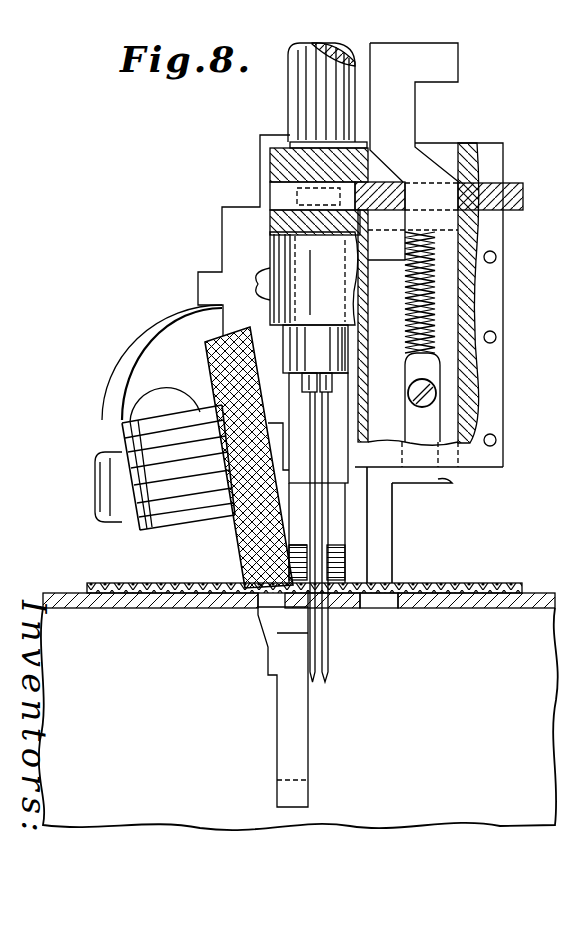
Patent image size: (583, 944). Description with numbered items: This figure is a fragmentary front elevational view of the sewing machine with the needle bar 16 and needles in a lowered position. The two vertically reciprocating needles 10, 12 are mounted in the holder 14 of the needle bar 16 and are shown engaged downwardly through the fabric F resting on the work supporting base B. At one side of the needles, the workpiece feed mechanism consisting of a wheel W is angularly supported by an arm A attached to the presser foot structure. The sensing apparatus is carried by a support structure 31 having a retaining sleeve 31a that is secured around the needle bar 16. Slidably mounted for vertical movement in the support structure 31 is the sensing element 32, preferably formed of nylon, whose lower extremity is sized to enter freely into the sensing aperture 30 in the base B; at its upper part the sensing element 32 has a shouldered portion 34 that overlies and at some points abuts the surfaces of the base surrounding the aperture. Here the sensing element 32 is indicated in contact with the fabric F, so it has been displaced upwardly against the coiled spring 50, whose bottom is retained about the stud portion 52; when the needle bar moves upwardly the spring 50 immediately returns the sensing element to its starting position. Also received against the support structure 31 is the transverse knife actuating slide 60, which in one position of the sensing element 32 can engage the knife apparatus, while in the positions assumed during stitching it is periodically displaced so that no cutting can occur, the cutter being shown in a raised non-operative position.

The needle bar 16 is at (298, 97).
The knife actuating slide 60 is at (523, 185).
The retaining sleeve 31a is at (312, 262).
The coiled spring 50 is at (440, 292).
The stud portion 52 is at (438, 338).
The support structure 31 is at (488, 402).
The holder 14 is at (300, 350).
The arm A is at (130, 345).
The wheel W is at (262, 538).
The needle 12 is at (323, 500).
The needle 10 is at (313, 510).
The shouldered portion 34 is at (456, 486).
The sensing element 32 is at (380, 557).
The fabric F is at (472, 582).
The work supporting base B is at (540, 586).
The sensing aperture 30 is at (373, 600).